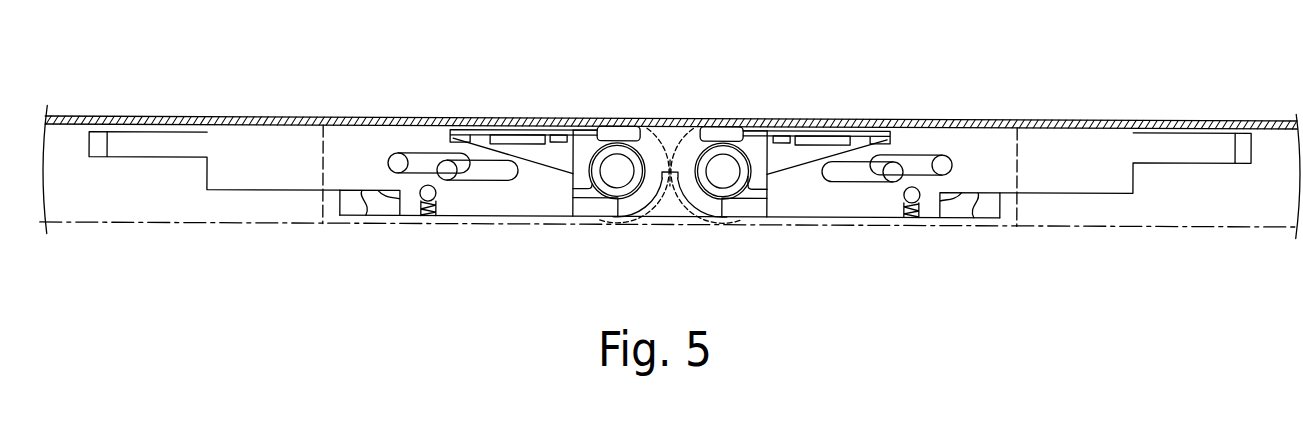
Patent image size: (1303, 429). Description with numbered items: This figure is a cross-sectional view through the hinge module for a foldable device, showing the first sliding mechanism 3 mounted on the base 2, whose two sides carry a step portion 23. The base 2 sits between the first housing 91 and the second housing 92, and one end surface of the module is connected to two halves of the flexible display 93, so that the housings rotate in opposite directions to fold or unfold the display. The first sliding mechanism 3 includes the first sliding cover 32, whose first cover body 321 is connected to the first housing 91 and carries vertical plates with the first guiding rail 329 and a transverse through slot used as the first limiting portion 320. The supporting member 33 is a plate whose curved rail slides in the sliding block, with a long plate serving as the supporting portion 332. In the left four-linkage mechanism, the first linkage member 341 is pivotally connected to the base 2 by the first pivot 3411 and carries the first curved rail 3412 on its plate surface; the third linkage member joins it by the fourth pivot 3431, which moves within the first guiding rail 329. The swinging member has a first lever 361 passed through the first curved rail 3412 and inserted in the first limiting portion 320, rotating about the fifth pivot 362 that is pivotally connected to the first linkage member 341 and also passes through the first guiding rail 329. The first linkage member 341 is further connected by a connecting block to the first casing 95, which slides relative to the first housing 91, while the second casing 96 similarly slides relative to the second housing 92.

The base 2 is at (672, 131).
The step portion 23 is at (758, 131).
The first sliding mechanism 3 is at (1083, 90).
The first sliding cover 32 is at (1103, 124).
The first cover body 321 is at (1087, 178).
The first guiding rail 329 is at (860, 181).
The supporting member 33 is at (800, 155).
The supporting portion 332 is at (824, 129).
The first linkage member 341 is at (755, 205).
The first pivot 3411 is at (723, 172).
The first curved rail 3412 is at (955, 210).
The fourth pivot 3431 is at (894, 162).
The fifth pivot 362 is at (950, 158).
The first lever 361 is at (910, 222).
The first limiting portion 320 is at (915, 220).
The first housing 91 is at (1192, 215).
The second housing 92 is at (198, 207).
The flexible display 93 is at (535, 119).
The first casing 95 is at (880, 225).
The second casing 96 is at (413, 223).